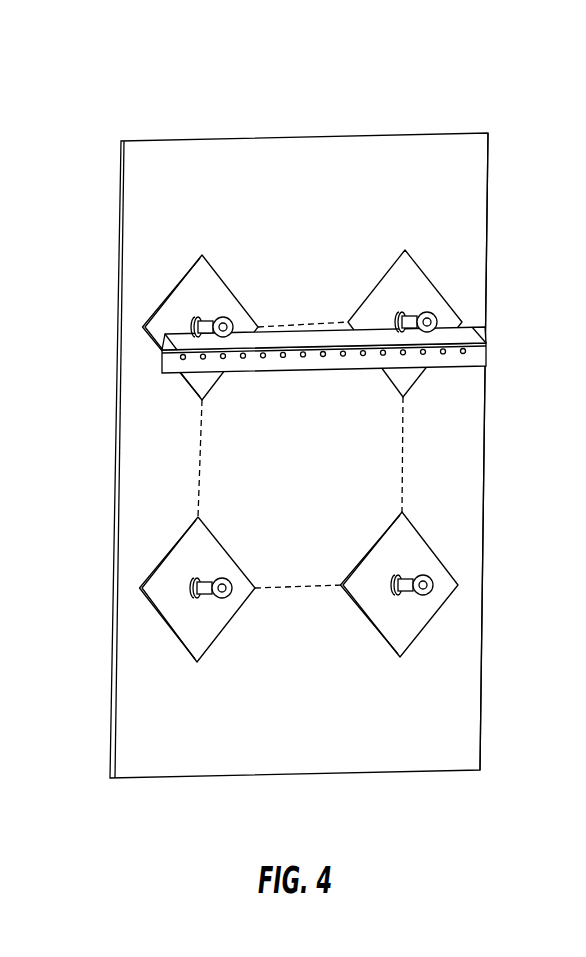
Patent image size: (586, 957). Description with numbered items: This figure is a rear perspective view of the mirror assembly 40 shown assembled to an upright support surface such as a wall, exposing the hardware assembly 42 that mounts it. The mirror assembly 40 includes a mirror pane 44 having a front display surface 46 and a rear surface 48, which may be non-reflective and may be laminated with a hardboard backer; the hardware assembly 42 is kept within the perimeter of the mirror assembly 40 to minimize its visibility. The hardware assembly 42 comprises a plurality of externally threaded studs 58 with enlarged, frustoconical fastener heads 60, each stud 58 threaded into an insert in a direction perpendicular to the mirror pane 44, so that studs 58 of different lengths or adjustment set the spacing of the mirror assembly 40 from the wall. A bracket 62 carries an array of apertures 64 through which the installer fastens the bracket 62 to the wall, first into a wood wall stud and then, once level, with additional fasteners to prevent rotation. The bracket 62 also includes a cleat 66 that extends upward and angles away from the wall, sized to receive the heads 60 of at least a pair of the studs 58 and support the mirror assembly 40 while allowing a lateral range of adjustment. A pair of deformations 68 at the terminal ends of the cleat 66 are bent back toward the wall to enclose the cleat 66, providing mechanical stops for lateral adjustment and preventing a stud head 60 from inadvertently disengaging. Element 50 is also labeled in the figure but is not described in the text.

The mirror assembly 40 is at (296, 404).
The hardware assembly 42 is at (440, 266).
The mirror pane 44 is at (482, 635).
The front display surface 46 is at (115, 502).
The rear surface 48 is at (358, 228).
The fastener assembly 50 is at (455, 300).
The studs 58 is at (195, 315).
The fastener heads 60 is at (212, 315).
The bracket 62 is at (286, 261).
The apertures 64 is at (458, 348).
The cleat 66 is at (300, 330).
The deformations 68 is at (487, 334).